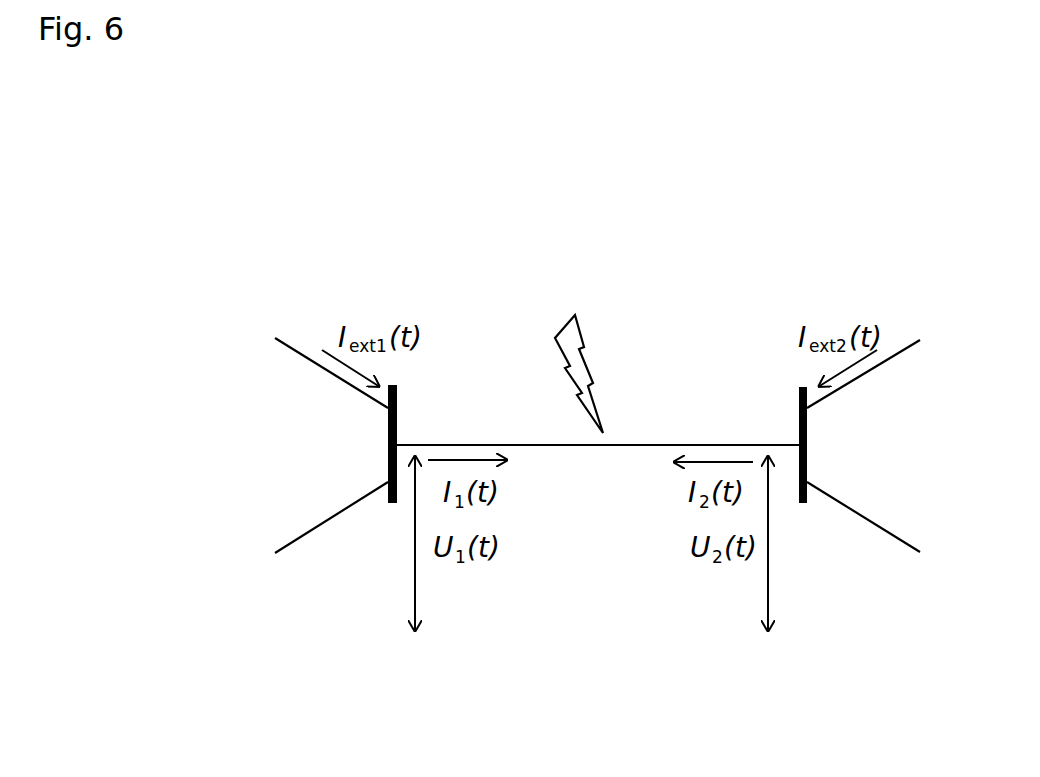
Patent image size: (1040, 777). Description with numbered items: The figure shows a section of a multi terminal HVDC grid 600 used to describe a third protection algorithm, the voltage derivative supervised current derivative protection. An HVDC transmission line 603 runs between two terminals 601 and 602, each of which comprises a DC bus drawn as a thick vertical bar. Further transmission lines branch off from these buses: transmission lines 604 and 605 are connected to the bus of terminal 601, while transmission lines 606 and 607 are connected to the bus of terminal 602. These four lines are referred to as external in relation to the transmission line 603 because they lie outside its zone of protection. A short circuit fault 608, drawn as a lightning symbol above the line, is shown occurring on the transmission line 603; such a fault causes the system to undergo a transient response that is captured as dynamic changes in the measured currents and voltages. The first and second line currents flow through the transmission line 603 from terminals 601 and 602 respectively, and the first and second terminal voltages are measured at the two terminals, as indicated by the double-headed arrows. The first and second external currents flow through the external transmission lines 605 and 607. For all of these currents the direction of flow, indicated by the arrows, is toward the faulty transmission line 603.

The multi terminal HVDC grid 600 is at (250, 746).
The terminal 601 is at (358, 444).
The terminal 602 is at (836, 445).
The HVDC transmission line 603 is at (598, 428).
The transmission line 604 is at (299, 528).
The transmission line 605 is at (299, 368).
The transmission line 606 is at (898, 528).
The transmission line 607 is at (898, 368).
The fault 608 is at (574, 352).